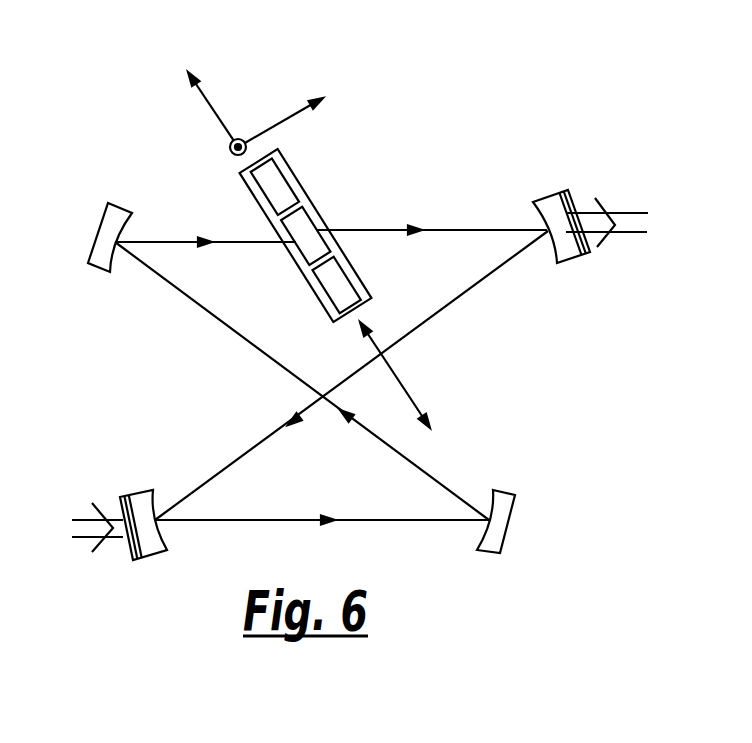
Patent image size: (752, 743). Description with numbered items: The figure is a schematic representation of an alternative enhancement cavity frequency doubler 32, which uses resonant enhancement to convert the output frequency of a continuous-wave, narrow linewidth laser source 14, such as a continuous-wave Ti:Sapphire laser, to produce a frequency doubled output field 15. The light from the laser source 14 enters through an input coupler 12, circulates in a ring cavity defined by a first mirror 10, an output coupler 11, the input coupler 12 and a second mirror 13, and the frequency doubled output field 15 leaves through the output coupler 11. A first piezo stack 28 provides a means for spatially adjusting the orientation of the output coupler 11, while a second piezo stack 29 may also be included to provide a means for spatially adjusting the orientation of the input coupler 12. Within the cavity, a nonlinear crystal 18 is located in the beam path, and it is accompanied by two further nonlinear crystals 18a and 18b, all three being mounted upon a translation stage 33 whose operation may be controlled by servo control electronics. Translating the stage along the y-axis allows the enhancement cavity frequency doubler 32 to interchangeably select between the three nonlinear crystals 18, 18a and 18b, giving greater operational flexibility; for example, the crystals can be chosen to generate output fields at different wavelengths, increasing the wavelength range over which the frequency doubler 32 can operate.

The first mirror 10 is at (88, 265).
The output coupler 11 is at (540, 198).
The input coupler 12 is at (153, 560).
The second mirror 13 is at (510, 527).
The laser source 14 is at (87, 518).
The frequency doubled output field 15 is at (627, 210).
The nonlinear crystal 18 is at (354, 220).
The nonlinear crystal 18a is at (275, 188).
The nonlinear crystal 18b is at (347, 293).
The first piezo stack 28 is at (585, 253).
The second piezo stack 29 is at (123, 497).
The enhancement cavity frequency doubler 32 is at (511, 80).
The translation stage 33 is at (302, 278).